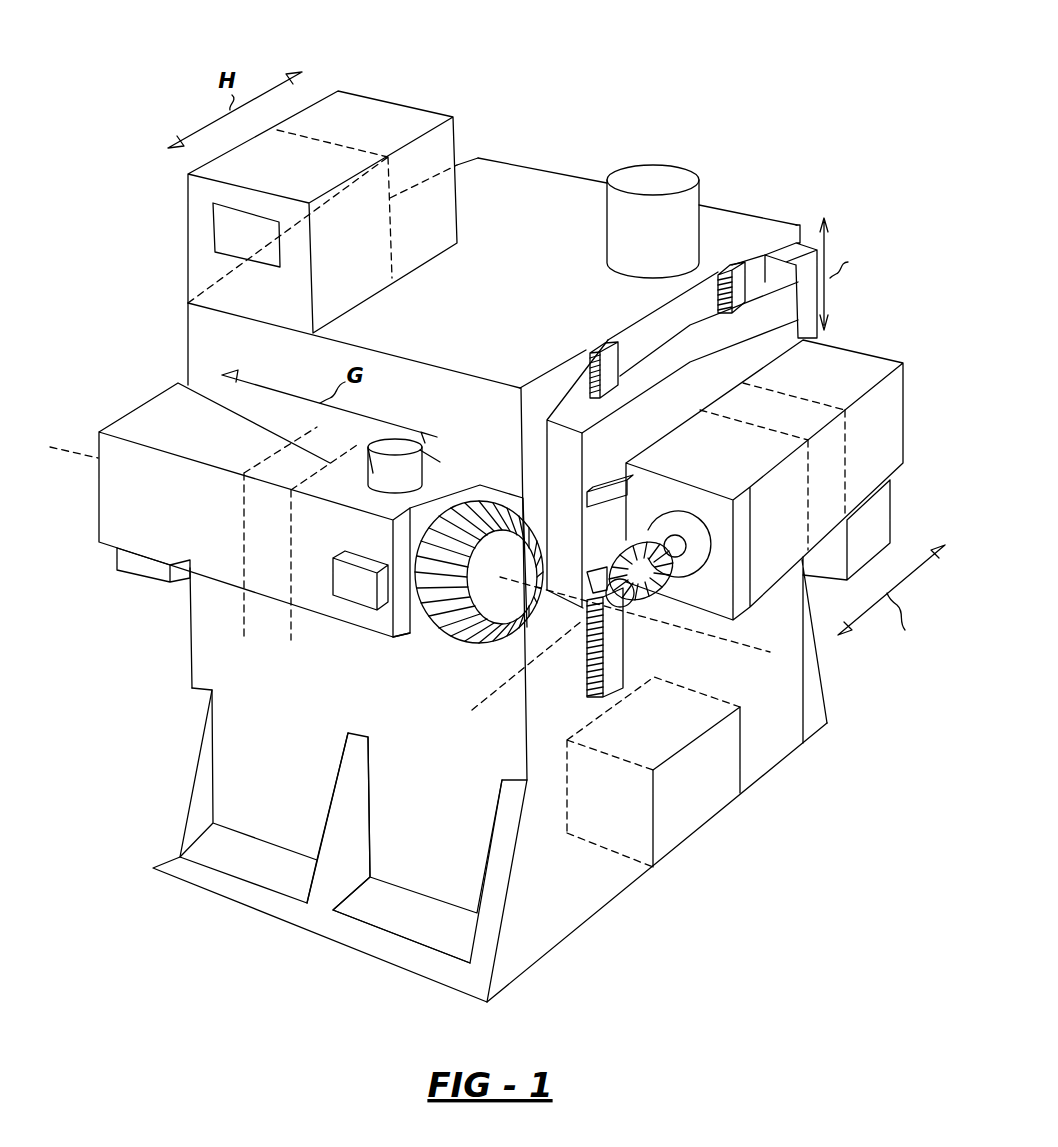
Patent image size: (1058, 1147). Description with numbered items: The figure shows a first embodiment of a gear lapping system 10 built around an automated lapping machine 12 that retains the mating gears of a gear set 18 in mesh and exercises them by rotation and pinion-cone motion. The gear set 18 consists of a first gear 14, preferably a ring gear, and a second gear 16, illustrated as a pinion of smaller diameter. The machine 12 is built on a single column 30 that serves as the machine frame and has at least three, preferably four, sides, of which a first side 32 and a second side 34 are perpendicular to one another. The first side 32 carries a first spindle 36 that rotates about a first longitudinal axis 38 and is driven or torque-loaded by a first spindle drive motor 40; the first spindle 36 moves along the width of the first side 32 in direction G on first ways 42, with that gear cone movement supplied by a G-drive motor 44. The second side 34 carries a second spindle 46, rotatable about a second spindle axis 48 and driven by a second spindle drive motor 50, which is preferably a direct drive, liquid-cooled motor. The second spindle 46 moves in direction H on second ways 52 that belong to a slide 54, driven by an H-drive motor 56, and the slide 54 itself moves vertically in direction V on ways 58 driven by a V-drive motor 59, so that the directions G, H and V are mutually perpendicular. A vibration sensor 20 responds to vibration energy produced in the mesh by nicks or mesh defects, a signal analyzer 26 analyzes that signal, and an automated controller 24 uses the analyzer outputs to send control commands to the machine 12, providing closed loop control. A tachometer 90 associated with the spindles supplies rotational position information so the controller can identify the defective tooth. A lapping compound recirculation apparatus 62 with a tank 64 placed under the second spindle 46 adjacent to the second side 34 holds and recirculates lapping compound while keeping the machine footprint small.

The gear lapping system 10 is at (634, 31).
The automated lapping machine 12 is at (478, 152).
The first gear 14 is at (443, 637).
The second gear 16 is at (740, 607).
The gear set 18 is at (463, 643).
The vibration sensor 20 is at (380, 473).
The automated controller 24 is at (320, 150).
The signal analyzer 26 is at (658, 167).
The single column 30 is at (537, 212).
The first side 32 is at (207, 650).
The second side 34 is at (580, 887).
The first spindle 36 is at (167, 525).
The first longitudinal axis 38 is at (57, 450).
The first spindle drive motor 40 is at (260, 563).
The first ways 42 is at (500, 483).
The G-drive motor 44 is at (133, 567).
The second spindle 46 is at (887, 428).
The second spindle axis 48 is at (547, 653).
The second spindle drive motor 50 is at (800, 400).
The second ways 52 is at (613, 497).
The slide 54 is at (767, 297).
The H-drive motor 56 is at (880, 530).
The ways 58 is at (617, 683).
The V-drive motor 59 is at (797, 236).
The lapping compound recirculation apparatus 62 is at (713, 817).
The tank 64 is at (723, 770).
The tachometer 90 is at (357, 587).